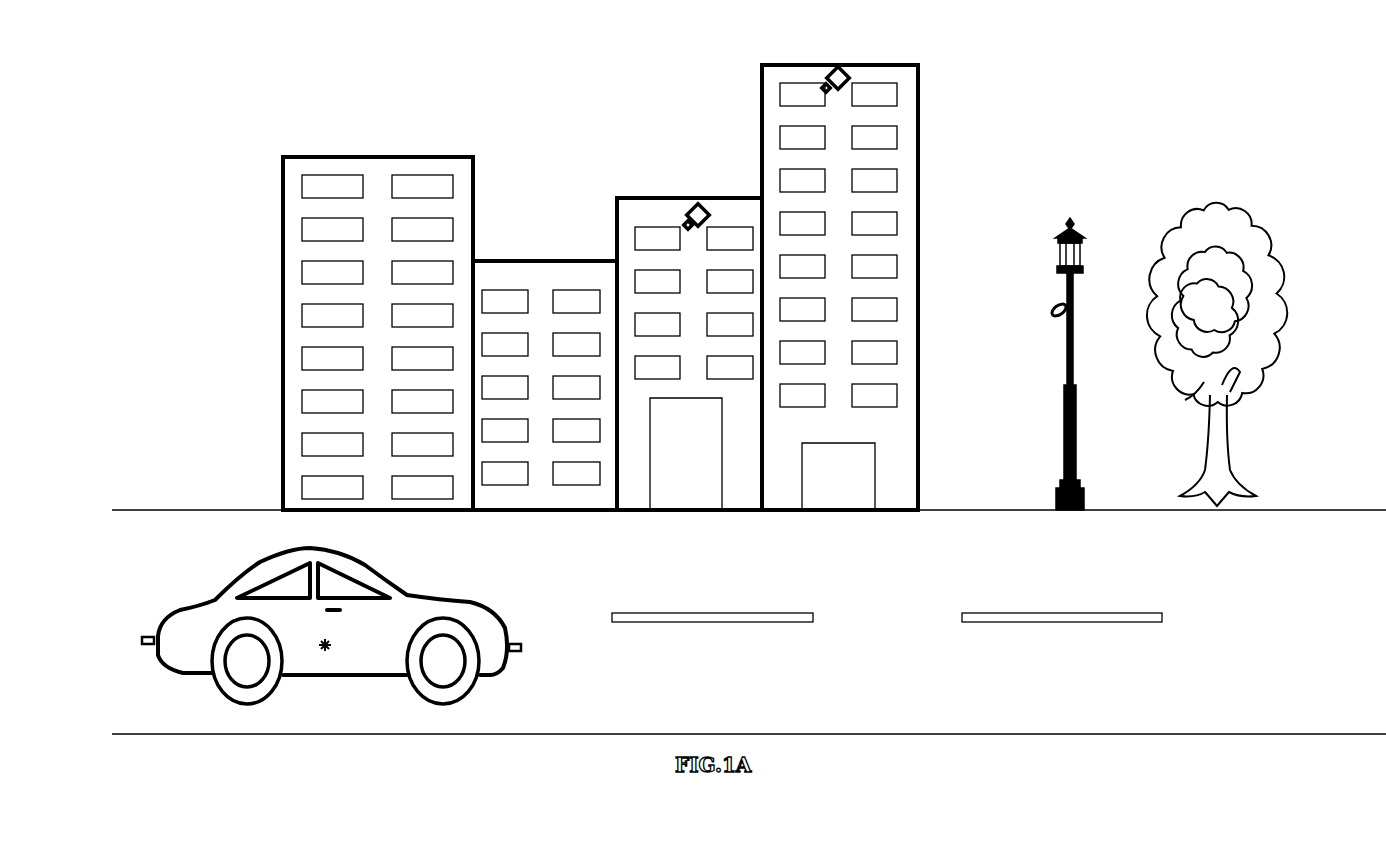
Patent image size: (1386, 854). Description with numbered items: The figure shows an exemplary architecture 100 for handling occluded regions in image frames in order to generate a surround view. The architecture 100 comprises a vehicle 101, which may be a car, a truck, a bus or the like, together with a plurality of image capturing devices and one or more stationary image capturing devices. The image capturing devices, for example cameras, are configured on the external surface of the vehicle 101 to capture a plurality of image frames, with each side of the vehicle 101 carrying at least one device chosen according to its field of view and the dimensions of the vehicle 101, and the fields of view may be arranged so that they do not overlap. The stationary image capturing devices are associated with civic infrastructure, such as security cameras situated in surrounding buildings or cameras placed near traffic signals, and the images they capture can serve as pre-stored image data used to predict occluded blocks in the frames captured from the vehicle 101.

The architecture 100 is at (446, 90).
The vehicle 101 is at (336, 551).